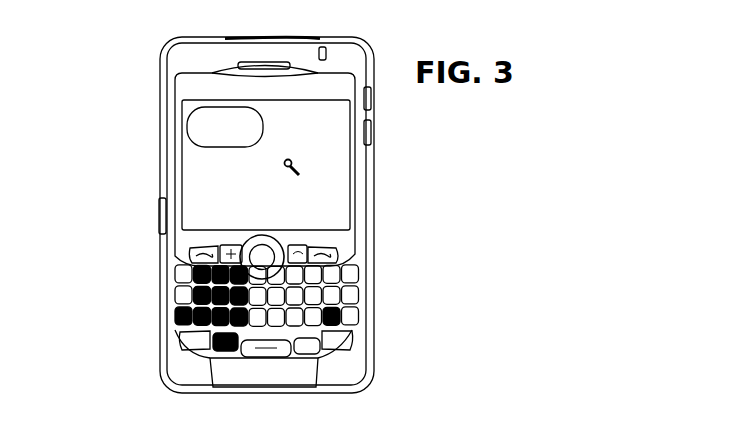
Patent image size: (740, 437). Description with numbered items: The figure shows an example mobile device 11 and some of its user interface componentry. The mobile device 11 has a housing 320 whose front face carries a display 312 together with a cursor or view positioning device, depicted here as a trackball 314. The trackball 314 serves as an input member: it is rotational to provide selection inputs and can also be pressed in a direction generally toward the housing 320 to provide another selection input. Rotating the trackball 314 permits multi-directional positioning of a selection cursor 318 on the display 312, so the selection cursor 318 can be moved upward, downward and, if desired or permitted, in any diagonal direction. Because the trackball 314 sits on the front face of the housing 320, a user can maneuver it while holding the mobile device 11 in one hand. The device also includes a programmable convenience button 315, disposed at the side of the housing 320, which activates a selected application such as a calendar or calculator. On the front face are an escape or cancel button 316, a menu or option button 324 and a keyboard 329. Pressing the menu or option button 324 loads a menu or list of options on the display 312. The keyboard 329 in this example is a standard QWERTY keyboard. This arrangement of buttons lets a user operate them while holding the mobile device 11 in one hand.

The mobile device 11 is at (293, 36).
The display 312 is at (225, 127).
The trackball 314 is at (280, 236).
The programmable convenience button 315 is at (160, 211).
The escape or cancel button 316 is at (307, 247).
The selection cursor 318 is at (302, 164).
The housing 320 is at (193, 358).
The menu or option button 324 is at (236, 244).
The keyboard 329 is at (177, 329).